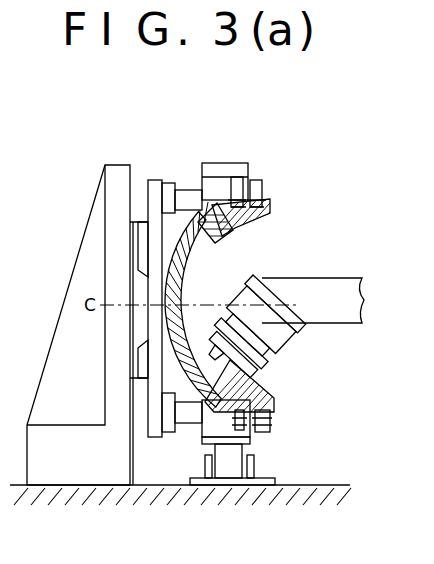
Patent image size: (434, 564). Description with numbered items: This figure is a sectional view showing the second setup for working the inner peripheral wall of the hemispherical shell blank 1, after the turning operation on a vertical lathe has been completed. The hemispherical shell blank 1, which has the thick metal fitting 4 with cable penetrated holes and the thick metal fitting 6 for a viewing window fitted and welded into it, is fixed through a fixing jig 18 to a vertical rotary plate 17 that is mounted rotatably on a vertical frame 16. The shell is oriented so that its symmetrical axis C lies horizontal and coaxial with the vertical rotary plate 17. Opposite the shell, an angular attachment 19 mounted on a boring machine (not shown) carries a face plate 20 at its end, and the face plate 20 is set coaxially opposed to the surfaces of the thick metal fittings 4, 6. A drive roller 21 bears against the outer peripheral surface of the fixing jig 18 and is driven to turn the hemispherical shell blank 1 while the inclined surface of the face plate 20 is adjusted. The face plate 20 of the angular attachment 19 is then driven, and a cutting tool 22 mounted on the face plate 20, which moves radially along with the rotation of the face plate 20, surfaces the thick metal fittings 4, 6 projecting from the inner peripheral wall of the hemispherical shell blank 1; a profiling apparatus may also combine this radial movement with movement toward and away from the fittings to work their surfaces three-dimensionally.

The hemispherical shell blank 1 is at (193, 262).
The thick metal fitting 4 is at (250, 381).
The thick metal fitting 6 is at (233, 223).
The vertical frame 16 is at (117, 247).
The vertical rotary plate 17 is at (154, 179).
The fixing jig 18 is at (250, 150).
The angular attachment 19 is at (334, 290).
The face plate 20 is at (264, 372).
The drive roller 21 is at (238, 452).
The cutting tool 22 is at (213, 350).